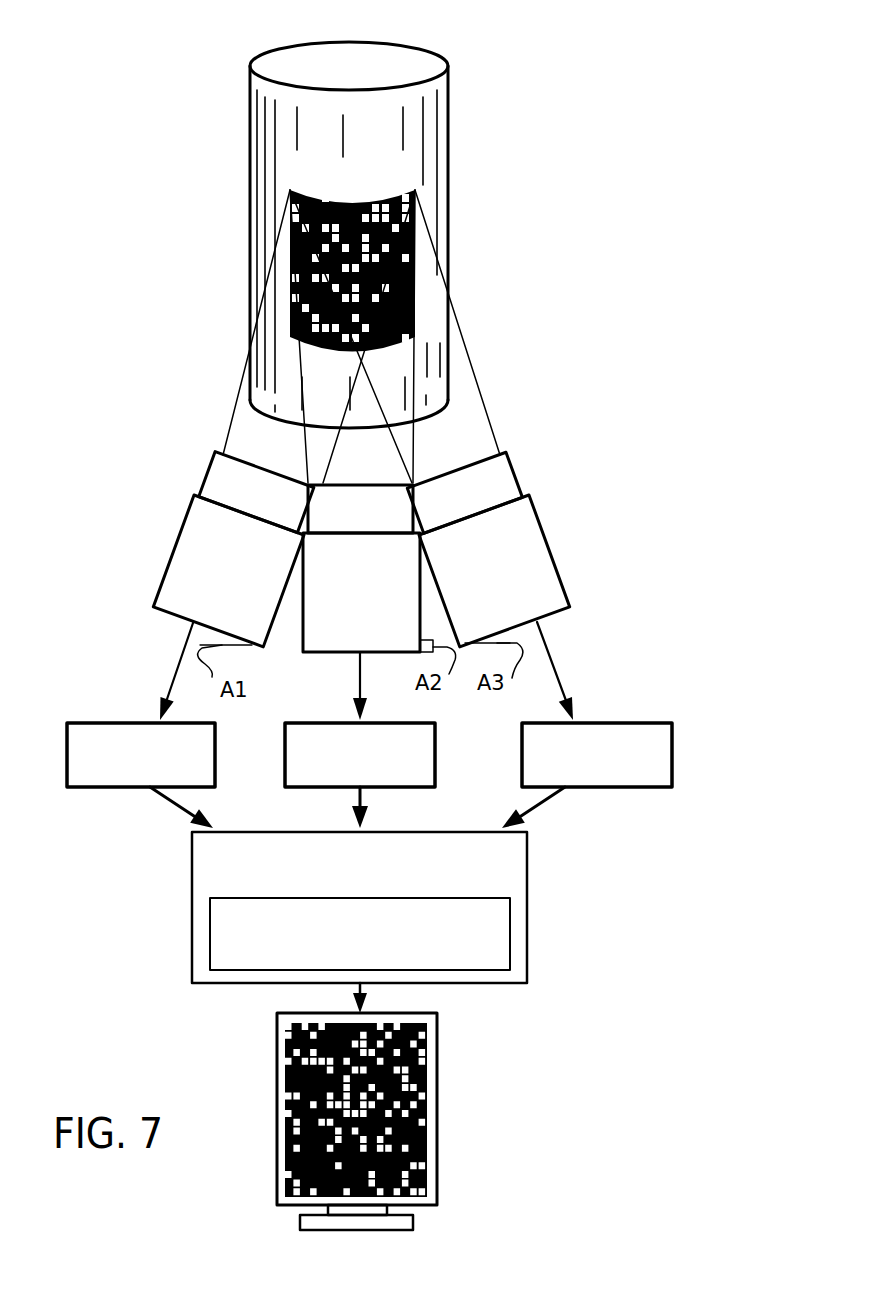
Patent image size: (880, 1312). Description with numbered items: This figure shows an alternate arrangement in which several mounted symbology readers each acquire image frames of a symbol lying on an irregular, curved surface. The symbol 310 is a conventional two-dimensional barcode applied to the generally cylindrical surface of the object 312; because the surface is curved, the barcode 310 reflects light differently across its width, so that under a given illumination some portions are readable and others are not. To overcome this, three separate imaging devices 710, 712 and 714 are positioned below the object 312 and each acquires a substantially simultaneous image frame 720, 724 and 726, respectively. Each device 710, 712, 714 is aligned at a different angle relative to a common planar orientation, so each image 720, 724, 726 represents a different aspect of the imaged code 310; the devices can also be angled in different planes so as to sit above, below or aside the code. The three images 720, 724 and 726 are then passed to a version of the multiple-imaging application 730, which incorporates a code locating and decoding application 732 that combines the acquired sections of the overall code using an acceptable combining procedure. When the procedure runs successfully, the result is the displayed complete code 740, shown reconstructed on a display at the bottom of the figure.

The object 312 is at (368, 72).
The symbol 310 is at (362, 202).
The imaging device 710 is at (183, 537).
The imaging device 712 is at (325, 637).
The imaging device 714 is at (543, 580).
The image frame 720 is at (140, 787).
The image frame 724 is at (400, 787).
The image frame 726 is at (615, 787).
The multiple-imaging application 730 is at (416, 922).
The code locating/decoding application 732 is at (510, 927).
The displayed complete code 740 is at (420, 1088).